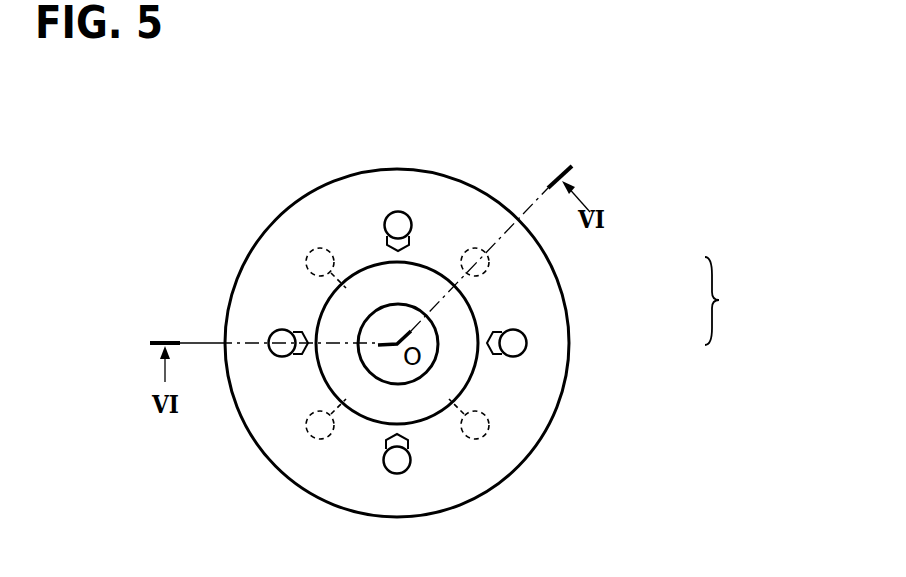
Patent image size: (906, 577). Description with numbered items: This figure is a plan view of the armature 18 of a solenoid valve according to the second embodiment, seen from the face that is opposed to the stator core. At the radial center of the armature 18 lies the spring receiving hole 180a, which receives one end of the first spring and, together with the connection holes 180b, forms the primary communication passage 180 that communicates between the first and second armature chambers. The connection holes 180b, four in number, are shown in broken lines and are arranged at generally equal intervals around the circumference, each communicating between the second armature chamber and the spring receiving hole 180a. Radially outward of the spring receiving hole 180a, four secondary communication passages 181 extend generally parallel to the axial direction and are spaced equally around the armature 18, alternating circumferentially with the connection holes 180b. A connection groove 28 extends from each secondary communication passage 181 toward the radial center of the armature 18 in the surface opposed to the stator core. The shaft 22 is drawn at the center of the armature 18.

The armature 18 is at (468, 210).
The center hole 22 is at (385, 322).
The connection groove 28 is at (297, 358).
The primary communication passage 180 is at (737, 301).
The spring receiving hole 180a is at (455, 333).
The connection holes 180b is at (472, 282).
The secondary communication passages 181 is at (280, 330).